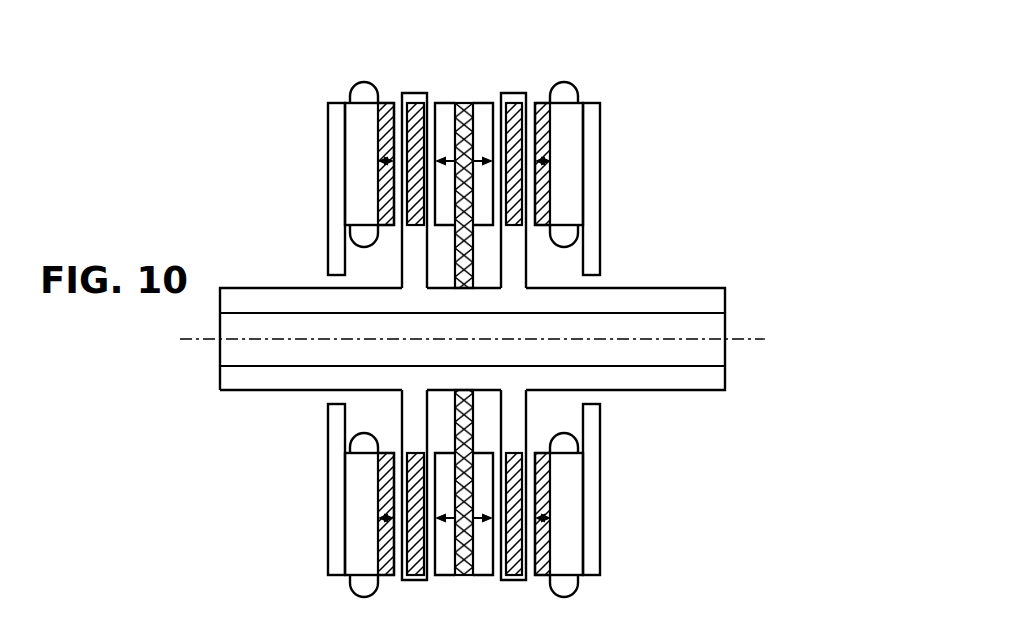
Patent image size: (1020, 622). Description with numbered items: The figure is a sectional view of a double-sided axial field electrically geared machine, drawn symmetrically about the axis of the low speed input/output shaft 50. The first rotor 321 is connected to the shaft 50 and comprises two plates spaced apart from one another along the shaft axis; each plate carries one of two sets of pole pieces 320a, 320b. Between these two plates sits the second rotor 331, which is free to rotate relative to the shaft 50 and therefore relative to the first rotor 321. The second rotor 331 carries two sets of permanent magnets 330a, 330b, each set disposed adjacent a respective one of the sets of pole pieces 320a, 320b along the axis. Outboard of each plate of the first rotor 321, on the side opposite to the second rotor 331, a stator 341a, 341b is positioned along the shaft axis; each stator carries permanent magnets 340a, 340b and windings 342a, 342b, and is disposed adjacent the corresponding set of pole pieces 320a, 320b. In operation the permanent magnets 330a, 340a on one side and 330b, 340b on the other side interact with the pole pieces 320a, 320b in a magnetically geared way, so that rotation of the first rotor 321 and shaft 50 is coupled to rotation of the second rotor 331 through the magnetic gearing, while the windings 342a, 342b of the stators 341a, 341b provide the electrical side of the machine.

The low speed input/output shaft 50 is at (710, 305).
The first set of pole pieces 320a is at (410, 212).
The second set of pole pieces 320b is at (517, 195).
The first rotor 321 is at (408, 415).
The first set of permanent magnets of the second rotor 330a is at (448, 123).
The second set of permanent magnets of the second rotor 330b is at (480, 135).
The second rotor 331 is at (466, 437).
The stator permanent magnets 340a is at (378, 133).
The stator permanent magnets 340b is at (540, 128).
The first stator 341a is at (360, 160).
The second stator 341b is at (578, 150).
The windings 342a is at (356, 230).
The windings 342b is at (570, 237).